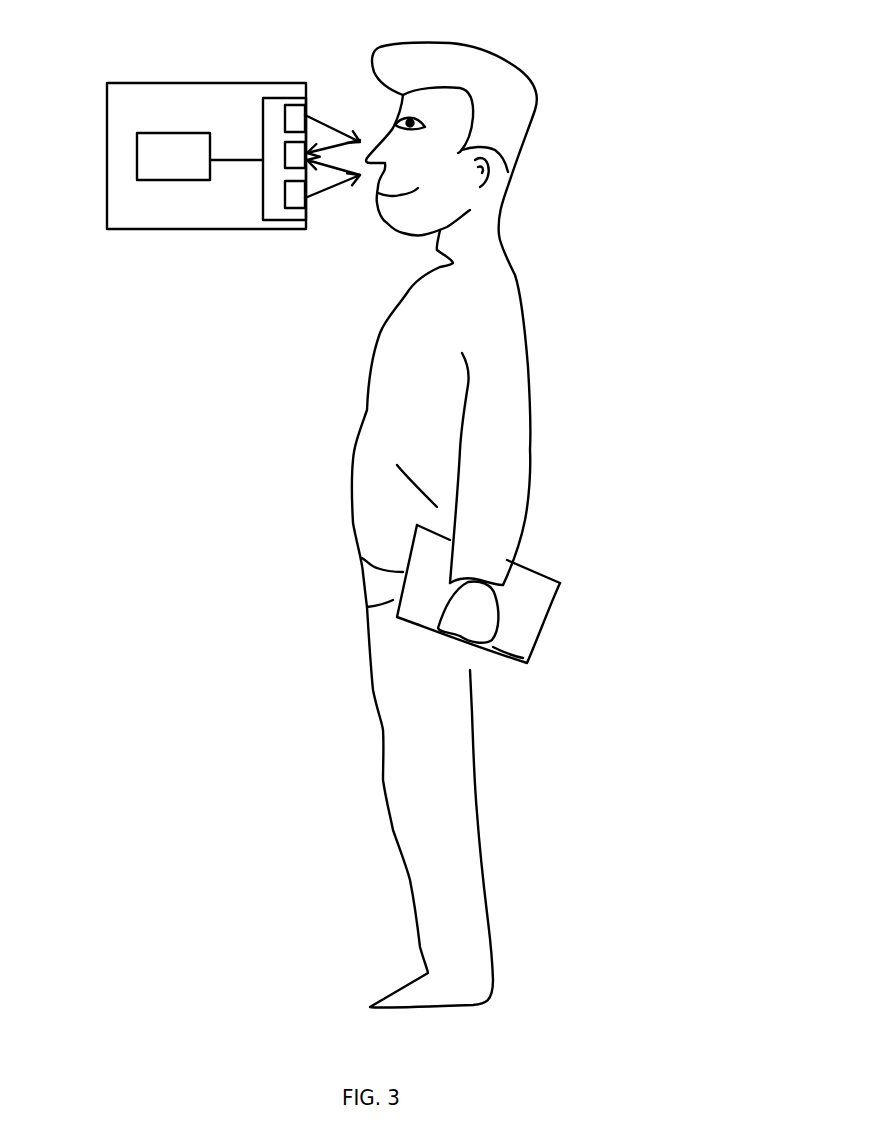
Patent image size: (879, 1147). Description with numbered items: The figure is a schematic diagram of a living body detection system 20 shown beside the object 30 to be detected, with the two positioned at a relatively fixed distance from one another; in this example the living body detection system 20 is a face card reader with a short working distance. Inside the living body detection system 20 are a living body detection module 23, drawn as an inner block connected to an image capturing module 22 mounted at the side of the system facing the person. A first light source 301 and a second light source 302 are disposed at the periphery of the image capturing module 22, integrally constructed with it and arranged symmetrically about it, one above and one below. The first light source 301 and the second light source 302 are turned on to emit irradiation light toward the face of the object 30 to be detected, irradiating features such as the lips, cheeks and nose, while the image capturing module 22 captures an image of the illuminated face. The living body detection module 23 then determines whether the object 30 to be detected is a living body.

The living body detection system 20 is at (147, 229).
The image capturing module 22 is at (290, 163).
The living body detection module 23 is at (160, 133).
The object to be detected 30 is at (597, 267).
The first light source 301 is at (293, 112).
The second light source 302 is at (303, 208).